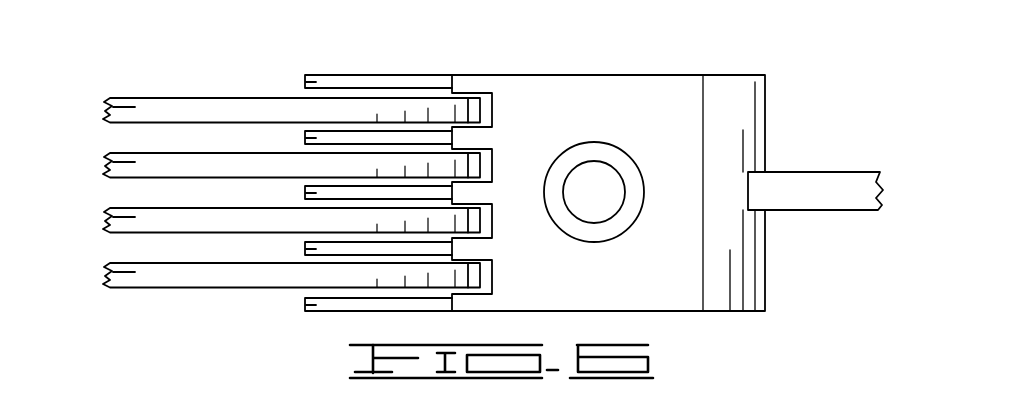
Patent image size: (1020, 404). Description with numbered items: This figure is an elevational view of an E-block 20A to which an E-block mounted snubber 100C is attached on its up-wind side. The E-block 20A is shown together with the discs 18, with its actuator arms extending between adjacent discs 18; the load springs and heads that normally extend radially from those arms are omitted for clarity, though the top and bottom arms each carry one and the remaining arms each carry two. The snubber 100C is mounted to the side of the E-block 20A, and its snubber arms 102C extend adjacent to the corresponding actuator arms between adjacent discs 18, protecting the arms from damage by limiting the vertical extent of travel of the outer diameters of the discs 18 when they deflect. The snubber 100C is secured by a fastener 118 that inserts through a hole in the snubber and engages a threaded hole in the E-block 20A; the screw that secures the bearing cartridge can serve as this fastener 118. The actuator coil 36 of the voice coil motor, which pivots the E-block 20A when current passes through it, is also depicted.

The discs 18 is at (110, 107).
The E-block 20A is at (250, 63).
The actuator coil 36 is at (808, 163).
The E-block mounted snubber 100C is at (570, 98).
The snubber arms 102C is at (458, 305).
The fastener 118 is at (573, 227).